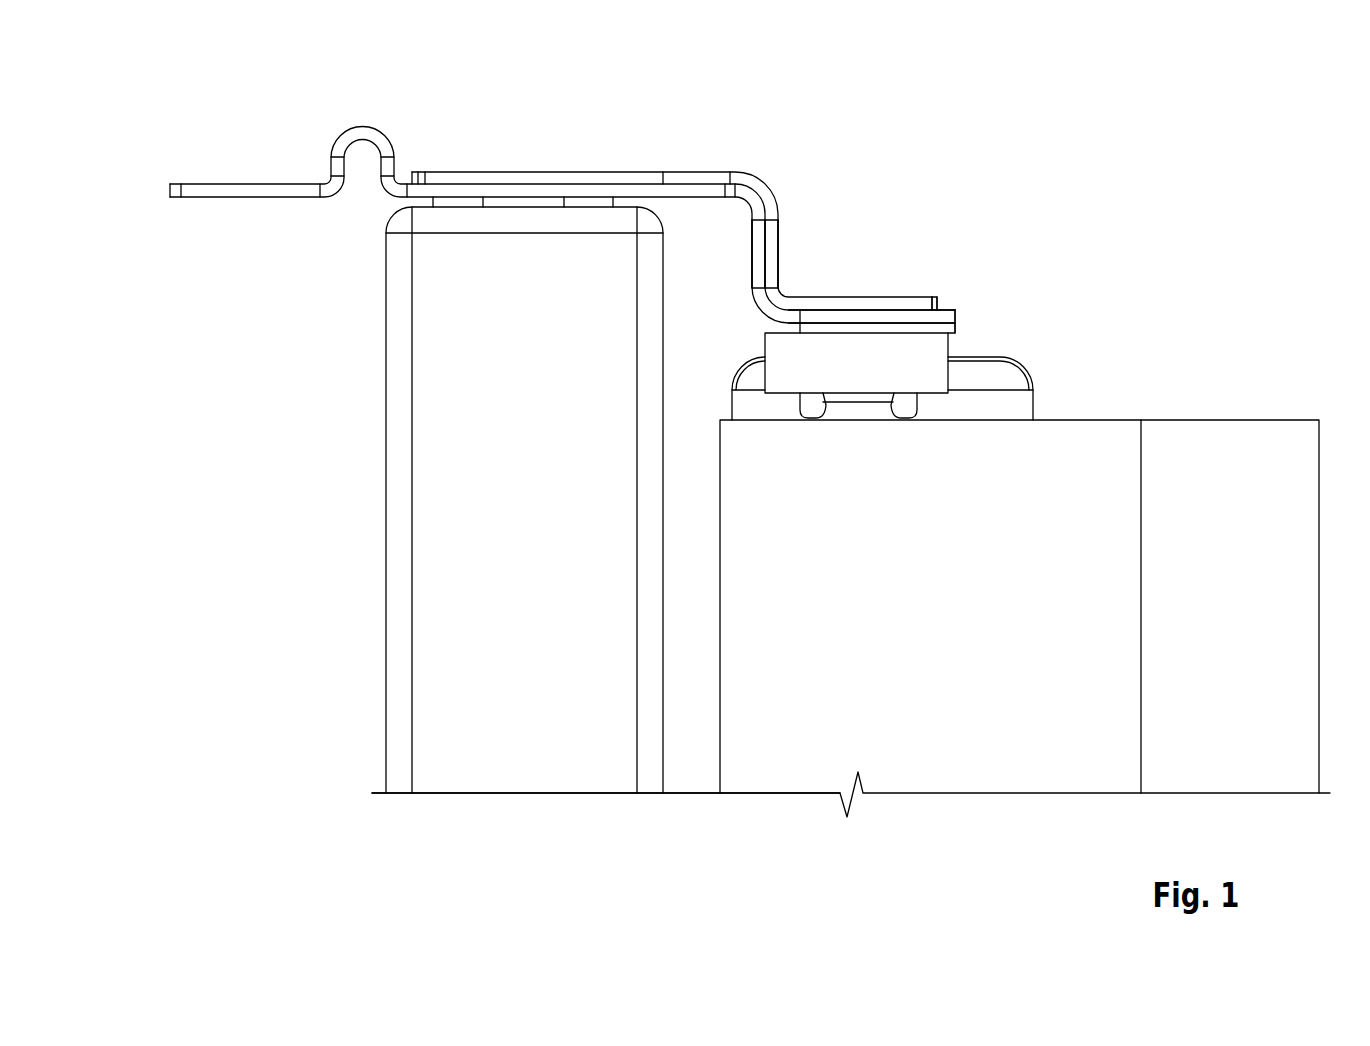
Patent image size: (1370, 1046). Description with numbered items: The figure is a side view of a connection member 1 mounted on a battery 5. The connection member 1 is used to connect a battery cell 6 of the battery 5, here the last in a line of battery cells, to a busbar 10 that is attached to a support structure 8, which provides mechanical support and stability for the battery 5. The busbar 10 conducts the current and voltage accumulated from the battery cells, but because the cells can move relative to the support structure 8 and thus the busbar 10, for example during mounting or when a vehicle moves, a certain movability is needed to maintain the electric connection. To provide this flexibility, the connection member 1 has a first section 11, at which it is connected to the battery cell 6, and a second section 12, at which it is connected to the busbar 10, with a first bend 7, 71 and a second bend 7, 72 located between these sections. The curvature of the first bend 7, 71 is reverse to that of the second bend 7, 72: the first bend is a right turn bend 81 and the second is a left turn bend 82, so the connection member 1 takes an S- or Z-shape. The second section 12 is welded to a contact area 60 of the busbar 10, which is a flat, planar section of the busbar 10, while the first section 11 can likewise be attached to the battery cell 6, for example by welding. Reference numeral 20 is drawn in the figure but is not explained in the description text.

The connection member 1 is at (783, 233).
The battery 5 is at (826, 82).
The battery cell 6 is at (368, 412).
The bend 7 is at (752, 170).
The support structure 8 is at (1217, 407).
The busbar 10 is at (950, 377).
The first section 11 is at (577, 157).
The second section 12 is at (950, 298).
The vertical section of bus bar 20 is at (780, 252).
The contact area 60 is at (913, 333).
The first bend 71 is at (779, 178).
The second bend 72 is at (783, 285).
The right turn bend 81 is at (790, 196).
The left turn bend 82 is at (877, 321).